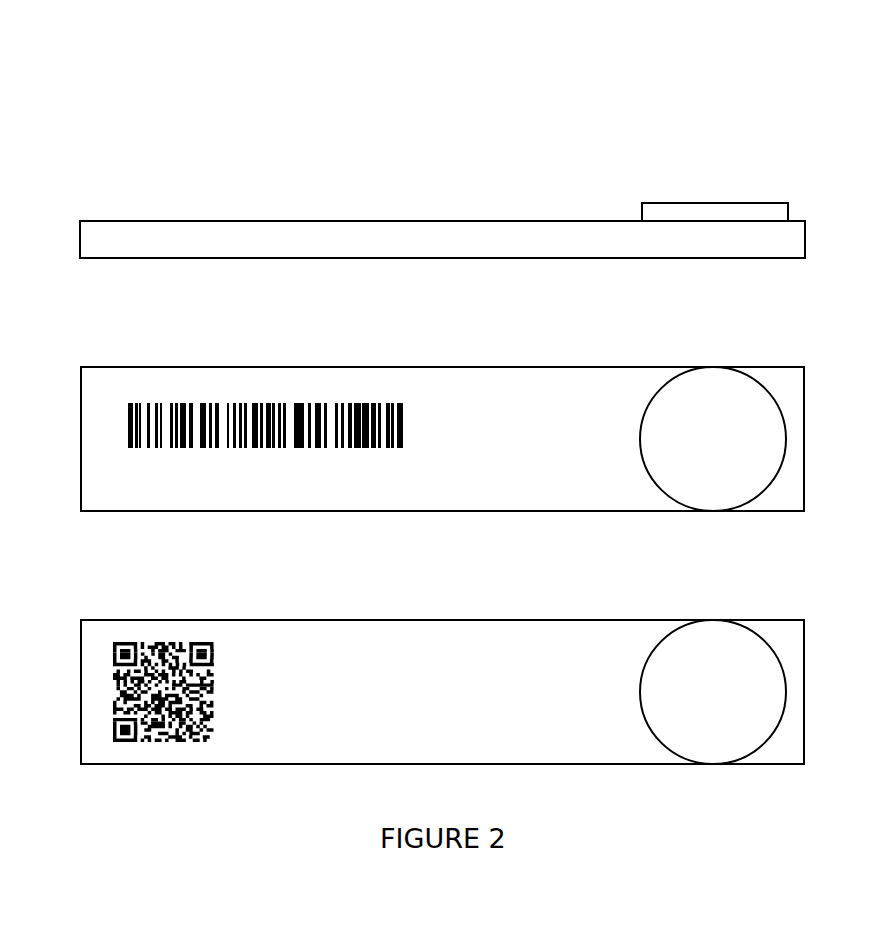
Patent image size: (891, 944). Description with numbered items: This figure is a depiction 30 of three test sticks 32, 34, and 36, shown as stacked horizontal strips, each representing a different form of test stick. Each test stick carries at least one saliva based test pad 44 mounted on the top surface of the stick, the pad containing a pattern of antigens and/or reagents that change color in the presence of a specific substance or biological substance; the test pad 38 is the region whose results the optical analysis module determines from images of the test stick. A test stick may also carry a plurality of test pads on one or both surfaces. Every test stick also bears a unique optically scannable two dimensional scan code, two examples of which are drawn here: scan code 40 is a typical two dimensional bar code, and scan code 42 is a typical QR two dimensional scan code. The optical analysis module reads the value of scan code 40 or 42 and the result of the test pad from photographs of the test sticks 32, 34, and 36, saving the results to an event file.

The test sticks depiction 30 is at (677, 85).
The test stick 32 is at (300, 221).
The test stick 34 is at (300, 367).
The test stick 36 is at (299, 620).
The test pad 38 is at (715, 367).
The two dimensional bar code 40 is at (136, 402).
The QR two dimensional scan code 42 is at (135, 642).
The saliva based test pad 44 is at (717, 203).